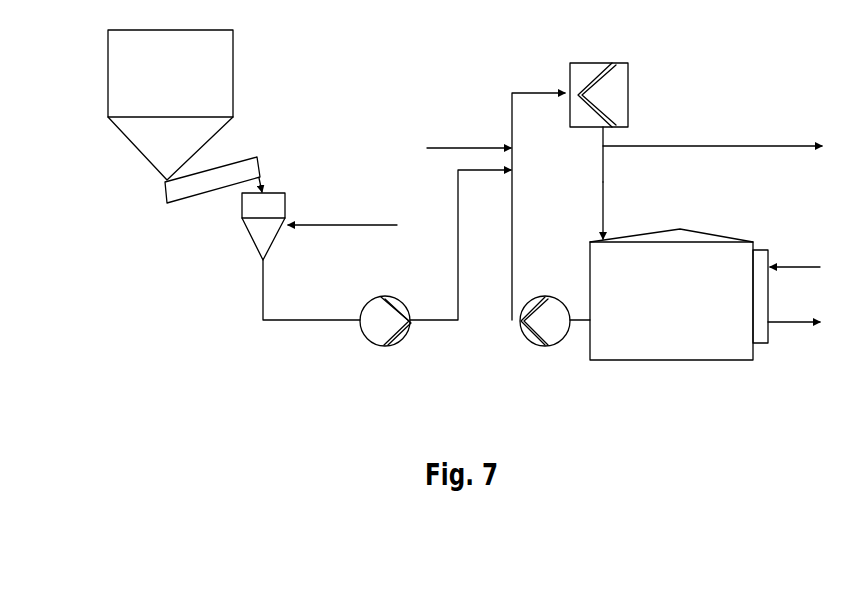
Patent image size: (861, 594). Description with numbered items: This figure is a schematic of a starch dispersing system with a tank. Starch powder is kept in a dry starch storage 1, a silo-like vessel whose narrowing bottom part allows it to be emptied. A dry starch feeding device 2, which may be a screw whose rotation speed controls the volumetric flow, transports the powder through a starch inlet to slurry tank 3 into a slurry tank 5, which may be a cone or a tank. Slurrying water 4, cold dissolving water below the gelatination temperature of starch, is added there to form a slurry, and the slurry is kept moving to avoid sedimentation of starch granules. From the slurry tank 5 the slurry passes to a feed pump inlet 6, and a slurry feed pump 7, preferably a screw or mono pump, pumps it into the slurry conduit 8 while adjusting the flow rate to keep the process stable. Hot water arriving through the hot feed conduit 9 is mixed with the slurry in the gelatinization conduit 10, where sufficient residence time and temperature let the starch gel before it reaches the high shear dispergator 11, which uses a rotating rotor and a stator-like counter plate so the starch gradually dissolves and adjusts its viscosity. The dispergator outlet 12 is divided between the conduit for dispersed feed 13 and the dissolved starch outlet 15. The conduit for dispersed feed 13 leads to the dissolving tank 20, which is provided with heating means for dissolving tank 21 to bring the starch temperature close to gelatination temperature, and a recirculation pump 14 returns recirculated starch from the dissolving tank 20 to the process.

The dry starch storage 1 is at (108, 62).
The dry starch feeding device 2 is at (161, 196).
The starch inlet to slurry tank 3 is at (262, 177).
The slurrying water 4 is at (379, 225).
The slurry tank 5 is at (249, 238).
The feed pump inlet 6 is at (323, 319).
The slurry feed pump 7 is at (381, 297).
The slurry conduit 8 is at (430, 320).
The hot feed conduit 9 is at (442, 148).
The gelatinization conduit 10 is at (519, 93).
The high shear dispergator 11 is at (582, 63).
The dispergator outlet 12 is at (603, 148).
The conduit for dispersed feed 13 is at (603, 196).
The recirculation pump 14 is at (540, 297).
The dissolved starch outlet 15 is at (730, 146).
The dissolving tank 20 is at (701, 230).
The heating means for dissolving tank 21 is at (757, 242).